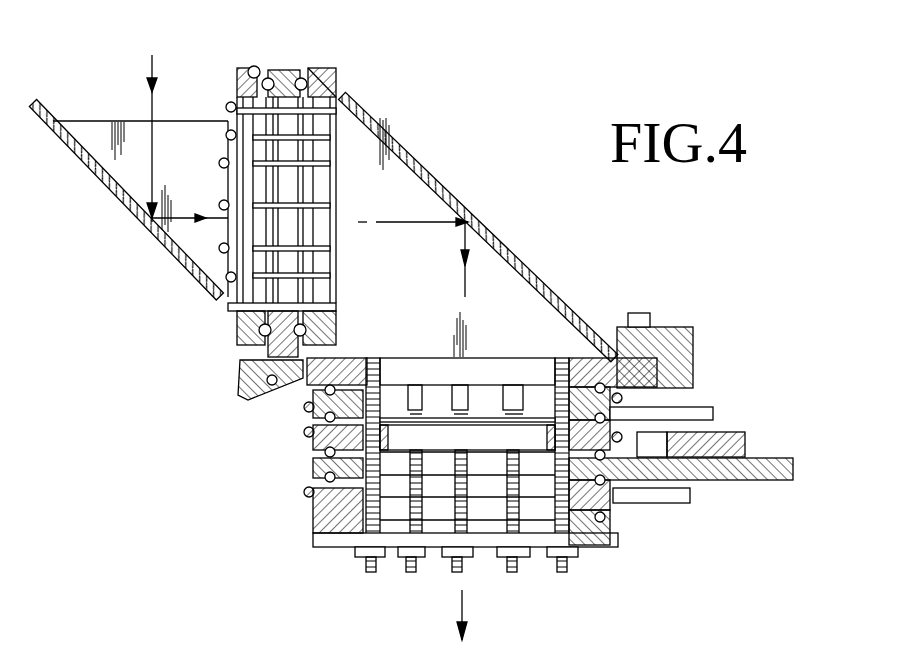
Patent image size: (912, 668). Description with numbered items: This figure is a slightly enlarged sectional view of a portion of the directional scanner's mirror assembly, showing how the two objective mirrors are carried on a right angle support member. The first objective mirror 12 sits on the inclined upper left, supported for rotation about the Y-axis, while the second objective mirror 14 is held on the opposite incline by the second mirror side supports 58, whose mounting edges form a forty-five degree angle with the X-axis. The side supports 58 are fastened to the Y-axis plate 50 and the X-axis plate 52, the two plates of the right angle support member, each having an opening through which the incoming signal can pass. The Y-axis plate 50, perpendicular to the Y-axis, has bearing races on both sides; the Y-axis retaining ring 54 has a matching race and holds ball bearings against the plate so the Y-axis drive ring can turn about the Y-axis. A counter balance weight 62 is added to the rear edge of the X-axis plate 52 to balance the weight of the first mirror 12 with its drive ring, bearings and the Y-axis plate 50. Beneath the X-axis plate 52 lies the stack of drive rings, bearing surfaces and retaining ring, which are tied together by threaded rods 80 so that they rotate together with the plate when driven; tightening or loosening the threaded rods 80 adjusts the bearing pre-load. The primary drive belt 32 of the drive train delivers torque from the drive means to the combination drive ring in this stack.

The first objective mirror 12 is at (115, 196).
The Y-axis plate 50 is at (286, 68).
The Y-axis retaining ring 54 is at (333, 72).
The second objective mirror 14 is at (472, 215).
The second mirror side supports 58 is at (538, 286).
The counter balance weight 62 is at (693, 358).
The X-axis plate 52 is at (657, 395).
The primary drive belt 32 is at (303, 392).
The threaded rods 80 is at (372, 574).